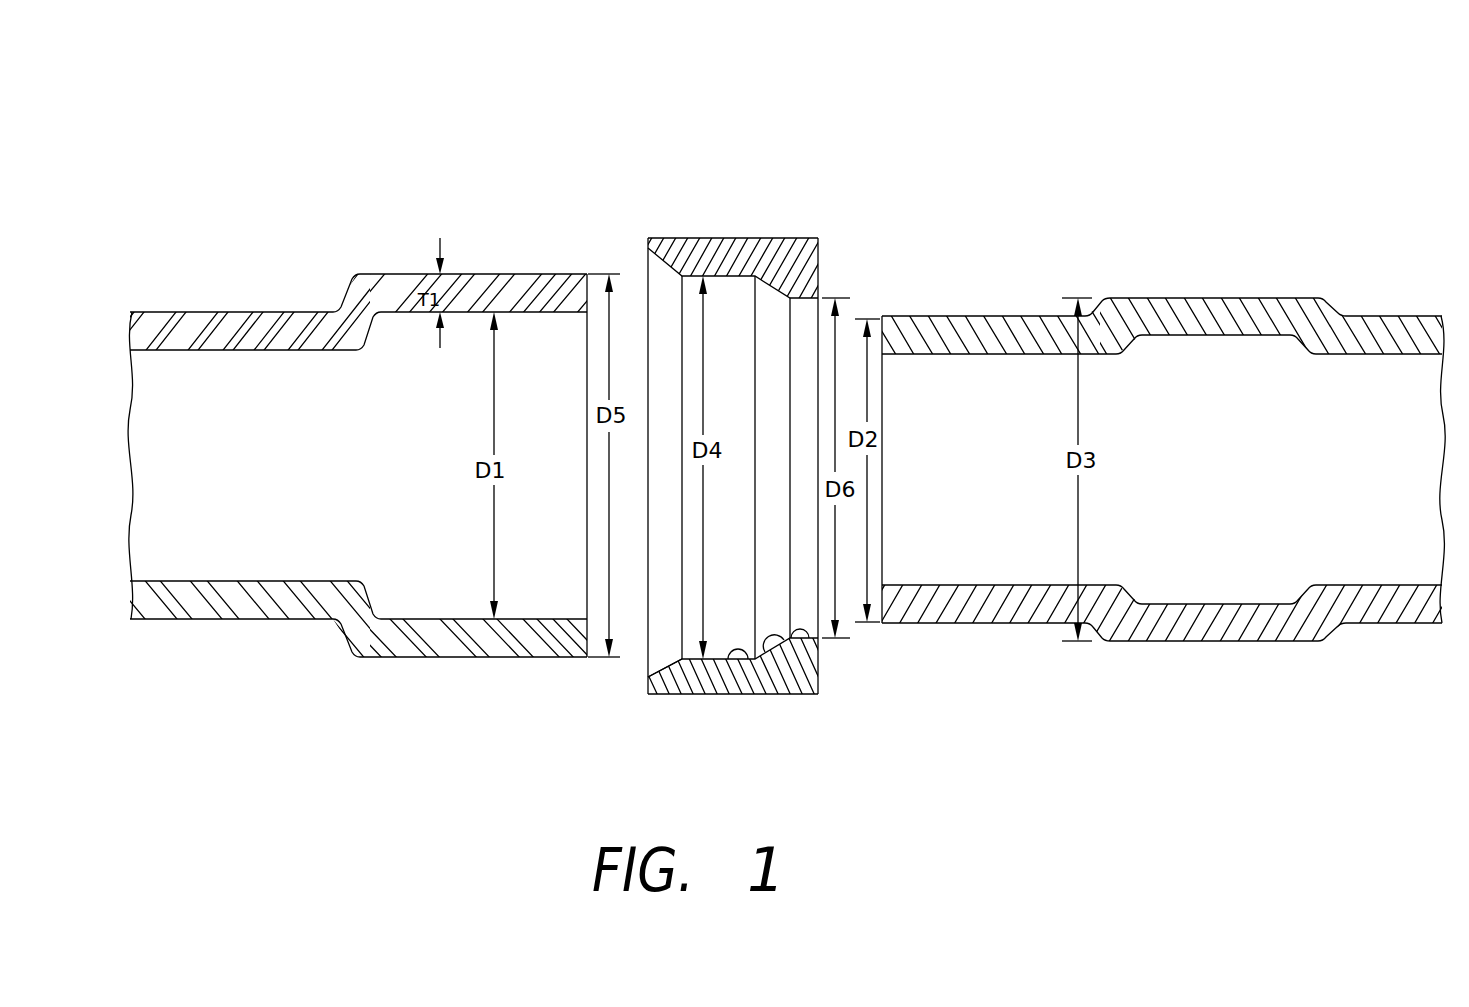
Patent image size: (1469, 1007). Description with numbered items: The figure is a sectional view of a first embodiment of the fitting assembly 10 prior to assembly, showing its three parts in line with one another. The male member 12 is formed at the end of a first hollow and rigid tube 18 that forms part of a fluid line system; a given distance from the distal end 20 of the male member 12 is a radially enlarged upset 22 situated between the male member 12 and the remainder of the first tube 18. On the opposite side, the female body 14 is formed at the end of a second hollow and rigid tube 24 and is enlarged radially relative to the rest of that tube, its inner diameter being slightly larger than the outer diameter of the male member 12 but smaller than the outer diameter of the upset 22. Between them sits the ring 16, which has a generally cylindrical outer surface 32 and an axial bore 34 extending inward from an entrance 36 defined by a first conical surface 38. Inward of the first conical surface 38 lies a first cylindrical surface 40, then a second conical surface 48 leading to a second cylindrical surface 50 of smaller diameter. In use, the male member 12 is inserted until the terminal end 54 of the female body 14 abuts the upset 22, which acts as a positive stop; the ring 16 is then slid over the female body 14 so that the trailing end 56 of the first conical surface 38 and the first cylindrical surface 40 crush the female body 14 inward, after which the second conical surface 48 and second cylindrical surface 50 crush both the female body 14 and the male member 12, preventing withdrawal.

The fitting assembly 10 is at (868, 122).
The male member 12 is at (1018, 309).
The female body 14 is at (488, 268).
The ring 16 is at (752, 230).
The first hollow and rigid tube 18 is at (1398, 316).
The distal end 20 is at (883, 316).
The radially enlarged upset 22 is at (1200, 298).
The second hollow and rigid tube 24 is at (201, 312).
The cylindrical outer surface 32 is at (776, 238).
The axial bore 34 is at (726, 467).
The entrance 36 is at (647, 640).
The first conical surface 38 is at (650, 668).
The first cylindrical surface 40 is at (743, 660).
The second conical surface 48 is at (783, 694).
The second cylindrical surface 50 is at (817, 656).
The terminal end 54 is at (588, 274).
The trailing end 56 is at (682, 694).